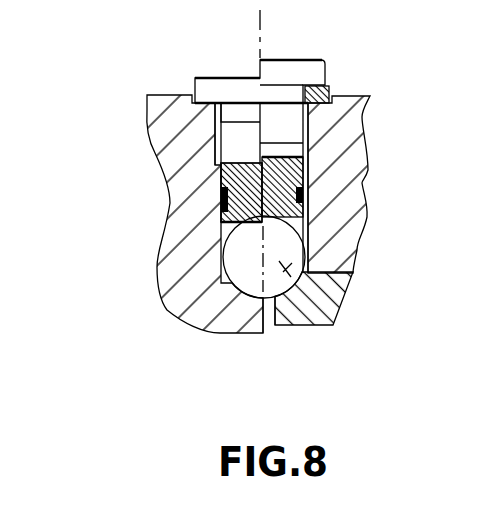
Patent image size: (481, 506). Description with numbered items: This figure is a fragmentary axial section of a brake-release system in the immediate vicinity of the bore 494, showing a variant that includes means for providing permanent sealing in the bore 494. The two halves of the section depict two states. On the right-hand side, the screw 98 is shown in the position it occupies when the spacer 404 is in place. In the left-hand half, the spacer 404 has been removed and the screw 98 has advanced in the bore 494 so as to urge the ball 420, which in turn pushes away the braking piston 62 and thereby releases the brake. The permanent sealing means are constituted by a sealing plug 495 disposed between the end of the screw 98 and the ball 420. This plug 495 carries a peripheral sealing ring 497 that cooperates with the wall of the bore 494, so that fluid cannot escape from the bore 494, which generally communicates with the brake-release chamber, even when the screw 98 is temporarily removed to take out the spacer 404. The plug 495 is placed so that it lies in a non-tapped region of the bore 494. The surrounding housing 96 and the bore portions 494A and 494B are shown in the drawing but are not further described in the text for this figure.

The screw 98 is at (220, 88).
The spacer 404 is at (328, 97).
The valve housing 96 is at (355, 110).
The upper bore portion 494A is at (214, 117).
The sealing plug 495 is at (308, 168).
The bore 494 is at (172, 171).
The peripheral sealing ring 497 is at (303, 195).
The resilient member 494B is at (223, 207).
The ball 420 is at (278, 271).
The braking piston 62 is at (286, 303).